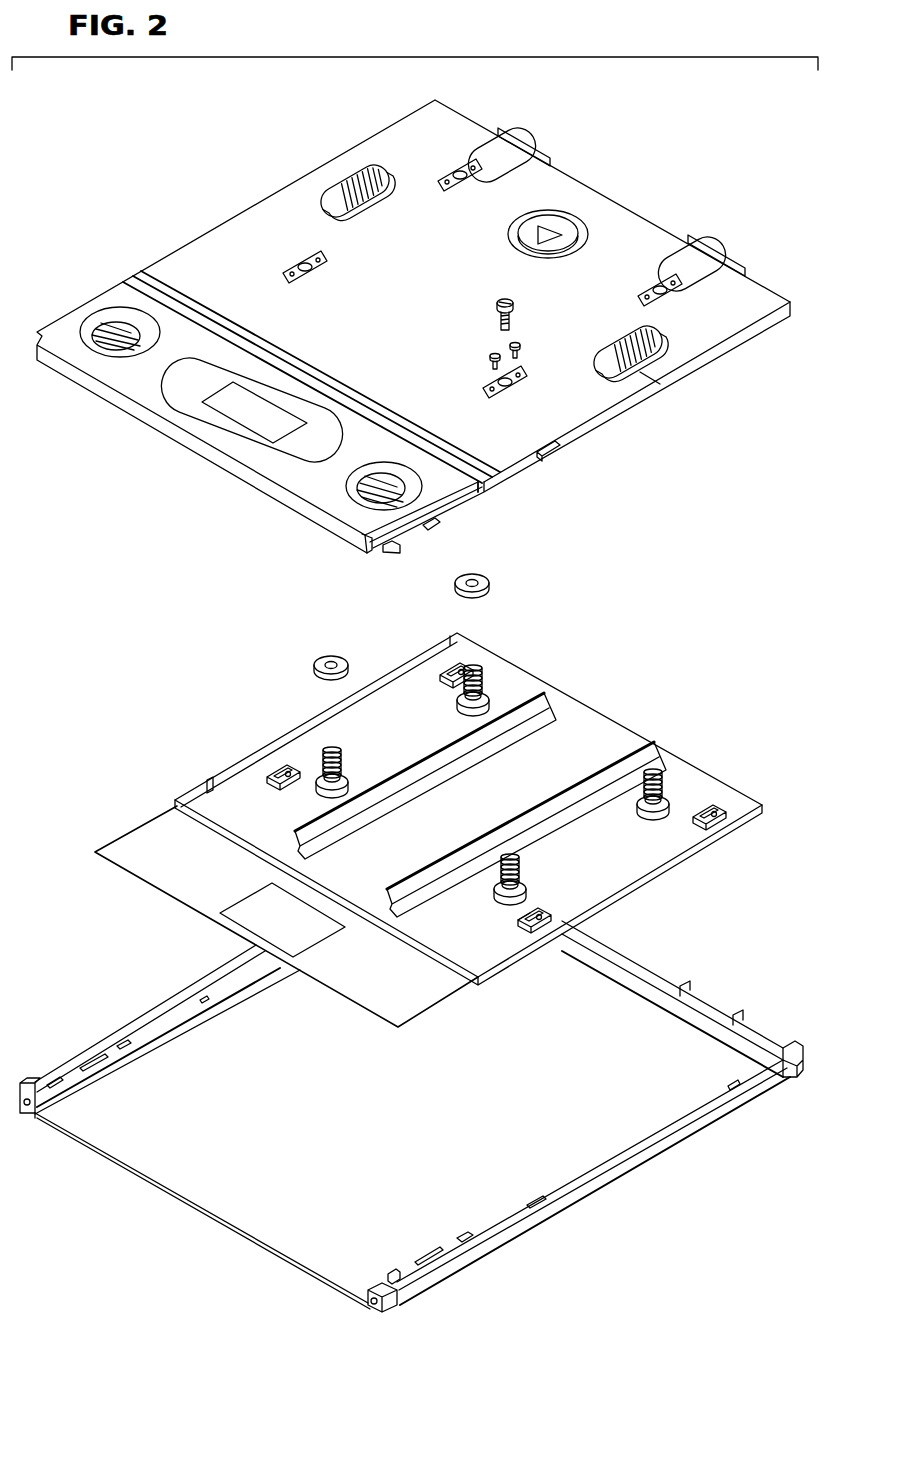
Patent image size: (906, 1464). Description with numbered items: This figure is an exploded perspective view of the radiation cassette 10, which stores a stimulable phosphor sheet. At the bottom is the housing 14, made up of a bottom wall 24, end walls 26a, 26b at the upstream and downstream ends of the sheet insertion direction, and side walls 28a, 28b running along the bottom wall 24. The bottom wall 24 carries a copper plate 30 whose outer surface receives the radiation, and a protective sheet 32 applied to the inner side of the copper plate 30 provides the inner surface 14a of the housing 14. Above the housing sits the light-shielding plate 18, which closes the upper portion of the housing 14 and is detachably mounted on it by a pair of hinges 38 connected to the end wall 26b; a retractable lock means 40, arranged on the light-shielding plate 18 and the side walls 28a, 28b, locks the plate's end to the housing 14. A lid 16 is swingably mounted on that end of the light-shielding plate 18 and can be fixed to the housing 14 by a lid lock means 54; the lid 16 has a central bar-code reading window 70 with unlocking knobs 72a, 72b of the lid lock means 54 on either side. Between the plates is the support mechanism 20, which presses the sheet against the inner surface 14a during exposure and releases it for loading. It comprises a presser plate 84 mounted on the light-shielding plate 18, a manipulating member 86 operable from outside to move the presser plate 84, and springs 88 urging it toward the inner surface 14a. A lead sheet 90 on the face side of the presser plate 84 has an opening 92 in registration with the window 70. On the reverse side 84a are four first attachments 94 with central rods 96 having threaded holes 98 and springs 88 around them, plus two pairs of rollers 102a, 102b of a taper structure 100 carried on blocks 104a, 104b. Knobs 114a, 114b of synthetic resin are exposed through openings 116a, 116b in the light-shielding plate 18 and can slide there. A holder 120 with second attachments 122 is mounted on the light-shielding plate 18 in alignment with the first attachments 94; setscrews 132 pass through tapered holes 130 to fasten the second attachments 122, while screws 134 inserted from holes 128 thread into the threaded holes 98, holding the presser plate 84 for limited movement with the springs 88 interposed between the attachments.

The radiation cassette 10 is at (143, 582).
The housing 14 is at (648, 1180).
The inner surface of the housing 14a is at (487, 1202).
The lid 16 is at (328, 415).
The light-shielding plate 18 is at (640, 194).
The support mechanism 20 is at (602, 636).
The bottom wall 24 is at (206, 1197).
The end wall 26a is at (388, 1302).
The end wall 26b is at (785, 1040).
The side wall 28a is at (590, 1192).
The side wall 28b is at (186, 989).
The copper plate 30 is at (335, 1292).
The protective sheet 32 is at (137, 1176).
The hinges 38 is at (723, 256).
The lock means 40 is at (570, 480).
The lid lock means 54 is at (387, 1258).
The bar-code reading window 70 is at (275, 408).
The unlocking knob 72a is at (395, 484).
The unlocking knob 72b is at (111, 330).
The presser plate 84 is at (586, 910).
The reverse side of the presser plate 84a is at (580, 723).
The manipulating member 86 is at (650, 378).
The springs 88 is at (641, 797).
The lead sheet 90 is at (433, 990).
The opening 92 is at (237, 917).
The first attachments 94 is at (496, 896).
The rods 96 is at (659, 806).
The threaded holes 98 is at (513, 857).
The taper structure 100 is at (535, 938).
The rollers 102a is at (541, 913).
The rollers 102b is at (285, 763).
The blocks 104a is at (522, 916).
The blocks 104b is at (278, 762).
The knob 114a is at (636, 335).
The knob 114b is at (370, 172).
The opening 116a is at (602, 352).
The opening 116b is at (332, 197).
The holder 120 is at (510, 584).
The second attachments 122 is at (490, 571).
The holes 128 is at (307, 262).
The tapered holes 130 is at (320, 259).
The setscrews 132 is at (491, 363).
The screws 134 is at (499, 323).